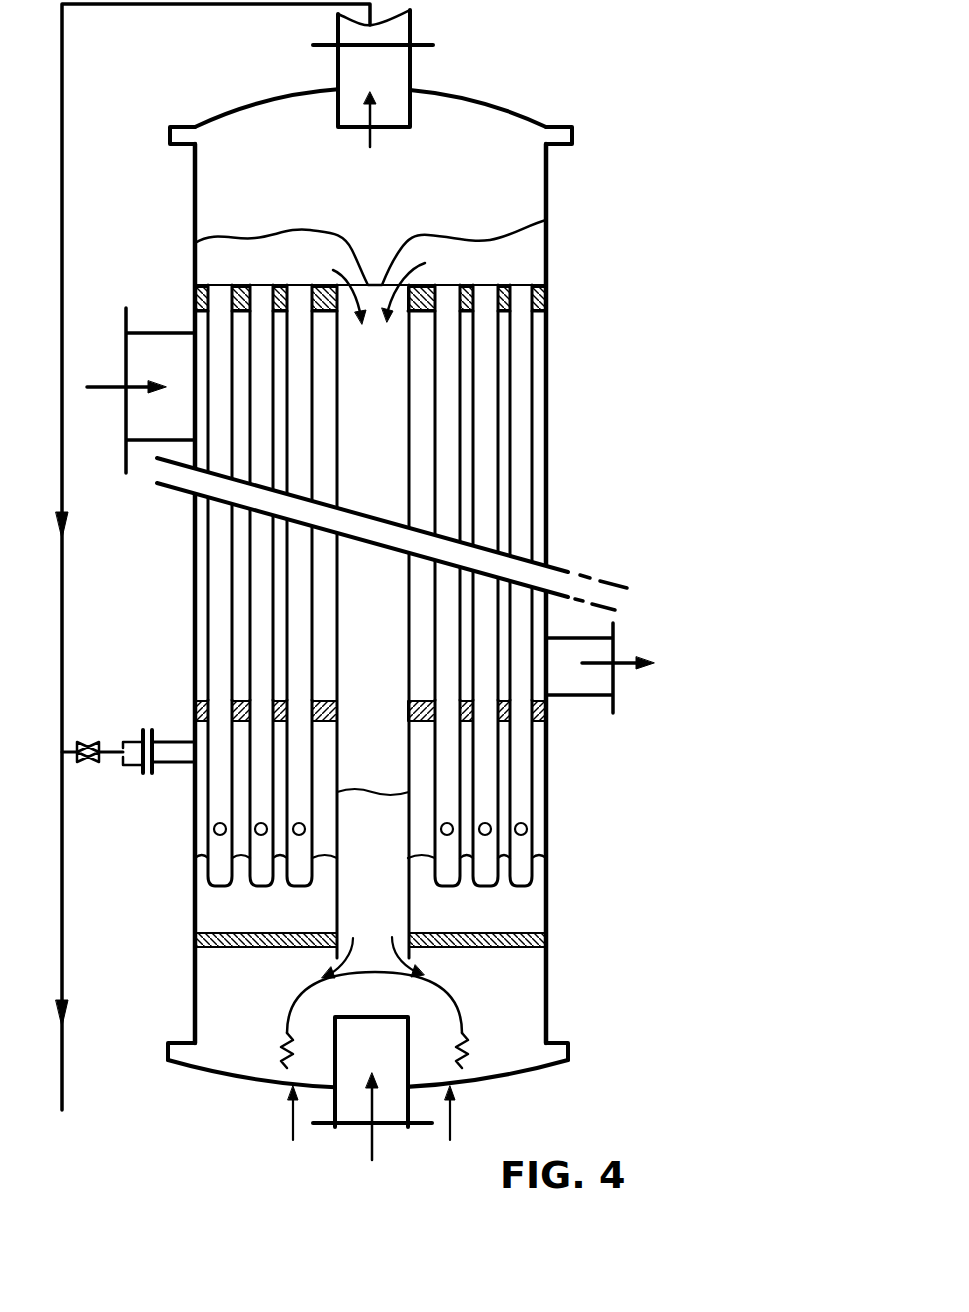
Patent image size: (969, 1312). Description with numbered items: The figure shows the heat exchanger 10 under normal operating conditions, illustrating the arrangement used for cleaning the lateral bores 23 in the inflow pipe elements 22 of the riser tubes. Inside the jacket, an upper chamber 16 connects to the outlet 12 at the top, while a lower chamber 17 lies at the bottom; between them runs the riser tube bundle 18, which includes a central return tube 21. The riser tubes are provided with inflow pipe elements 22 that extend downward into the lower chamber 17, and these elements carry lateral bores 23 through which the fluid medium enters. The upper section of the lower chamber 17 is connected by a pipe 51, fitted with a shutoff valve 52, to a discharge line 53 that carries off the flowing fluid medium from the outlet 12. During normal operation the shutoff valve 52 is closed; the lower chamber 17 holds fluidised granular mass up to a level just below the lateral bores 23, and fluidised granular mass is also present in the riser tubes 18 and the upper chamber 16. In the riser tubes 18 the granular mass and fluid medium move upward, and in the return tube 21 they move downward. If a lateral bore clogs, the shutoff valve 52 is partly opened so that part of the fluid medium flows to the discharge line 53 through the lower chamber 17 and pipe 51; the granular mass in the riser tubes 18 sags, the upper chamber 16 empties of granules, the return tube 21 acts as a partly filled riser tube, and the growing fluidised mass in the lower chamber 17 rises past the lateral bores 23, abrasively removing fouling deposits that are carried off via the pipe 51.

The heat exchanger 10 is at (187, 592).
The outlet 12 is at (388, 77).
The upper chamber 16 is at (527, 184).
The lower chamber 17 is at (528, 988).
The riser tube bundle 18 is at (478, 497).
The return tube 21 is at (395, 367).
The inflow pipe elements 22 is at (478, 748).
The lateral bores 23 is at (491, 826).
The pipe 51 is at (163, 760).
The shutoff valve 52 is at (88, 765).
The discharge line 53 is at (67, 602).